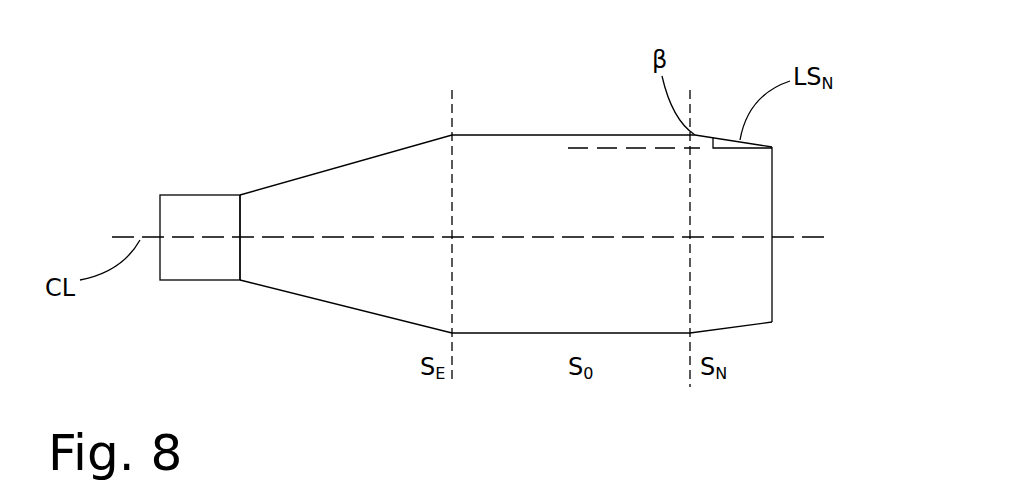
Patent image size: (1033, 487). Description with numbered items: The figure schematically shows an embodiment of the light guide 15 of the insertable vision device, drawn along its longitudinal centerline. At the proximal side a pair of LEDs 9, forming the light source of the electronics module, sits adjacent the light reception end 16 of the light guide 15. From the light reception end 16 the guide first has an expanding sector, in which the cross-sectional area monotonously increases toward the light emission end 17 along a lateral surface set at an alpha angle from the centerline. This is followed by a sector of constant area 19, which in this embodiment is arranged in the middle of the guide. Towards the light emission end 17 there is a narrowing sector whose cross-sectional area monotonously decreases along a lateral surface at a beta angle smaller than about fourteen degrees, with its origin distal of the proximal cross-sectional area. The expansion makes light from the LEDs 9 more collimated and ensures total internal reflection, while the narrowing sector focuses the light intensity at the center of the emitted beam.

The LEDs 9 is at (205, 282).
The light guide 15 is at (538, 300).
The light reception end 16 is at (240, 222).
The light emission end 17 is at (772, 236).
The constant area 19 is at (595, 135).